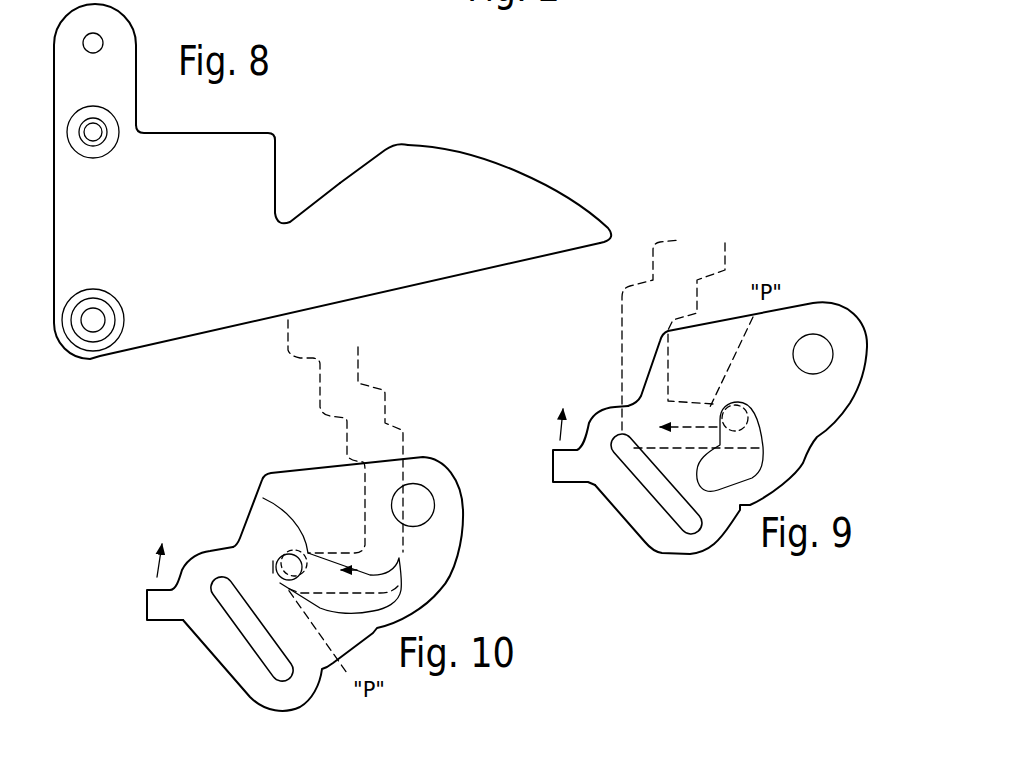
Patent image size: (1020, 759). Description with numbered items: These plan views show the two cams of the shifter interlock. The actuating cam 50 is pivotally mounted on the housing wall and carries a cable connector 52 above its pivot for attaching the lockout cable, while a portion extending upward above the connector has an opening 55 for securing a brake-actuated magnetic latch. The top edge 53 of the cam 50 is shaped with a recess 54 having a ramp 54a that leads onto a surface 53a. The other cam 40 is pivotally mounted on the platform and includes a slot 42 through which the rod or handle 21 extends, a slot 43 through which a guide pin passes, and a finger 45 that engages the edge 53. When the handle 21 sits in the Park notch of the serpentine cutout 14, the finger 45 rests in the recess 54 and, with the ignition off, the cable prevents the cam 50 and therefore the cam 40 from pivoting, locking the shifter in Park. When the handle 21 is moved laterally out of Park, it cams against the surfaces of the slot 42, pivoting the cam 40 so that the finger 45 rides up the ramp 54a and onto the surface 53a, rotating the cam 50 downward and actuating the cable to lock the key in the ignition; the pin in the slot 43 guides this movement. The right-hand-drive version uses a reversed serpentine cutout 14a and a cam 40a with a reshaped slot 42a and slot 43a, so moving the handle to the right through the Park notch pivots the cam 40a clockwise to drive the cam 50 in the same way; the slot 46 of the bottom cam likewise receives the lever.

In FIG. 8, the actuating cam 50 is at (420, 283).
In FIG. 8, the cable connector 52 is at (112, 113).
In FIG. 8, the top edge 53 is at (250, 127).
In FIG. 8, the surface 53a is at (518, 167).
In FIG. 8, the recess 54 is at (282, 221).
In FIG. 8, the ramp 54a is at (365, 162).
In FIG. 8, the opening 55 is at (103, 41).
In FIG. 9, the serpentine cutout 14 is at (619, 345).
In FIG. 10, the serpentine cutout 14a is at (320, 407).
In FIG. 9, the cam 40 is at (790, 321).
In FIG. 10, the cam 40a is at (326, 487).
In FIG. 9, the slot 42 is at (758, 440).
In FIG. 10, the slot 42a is at (263, 498).
In FIG. 9, the slot 43 is at (648, 506).
In FIG. 10, the slot 43a is at (240, 653).
In FIG. 9, the finger 45 is at (567, 473).
In FIG. 10, the finger 45 is at (167, 610).
In FIG. 9, the slot 46 is at (834, 353).
In FIG. 10, the rod or handle 21 is at (277, 556).